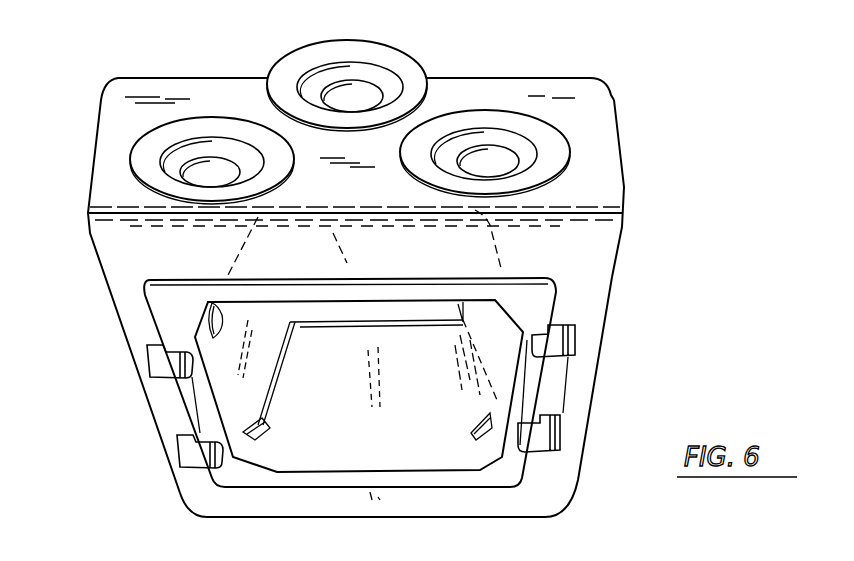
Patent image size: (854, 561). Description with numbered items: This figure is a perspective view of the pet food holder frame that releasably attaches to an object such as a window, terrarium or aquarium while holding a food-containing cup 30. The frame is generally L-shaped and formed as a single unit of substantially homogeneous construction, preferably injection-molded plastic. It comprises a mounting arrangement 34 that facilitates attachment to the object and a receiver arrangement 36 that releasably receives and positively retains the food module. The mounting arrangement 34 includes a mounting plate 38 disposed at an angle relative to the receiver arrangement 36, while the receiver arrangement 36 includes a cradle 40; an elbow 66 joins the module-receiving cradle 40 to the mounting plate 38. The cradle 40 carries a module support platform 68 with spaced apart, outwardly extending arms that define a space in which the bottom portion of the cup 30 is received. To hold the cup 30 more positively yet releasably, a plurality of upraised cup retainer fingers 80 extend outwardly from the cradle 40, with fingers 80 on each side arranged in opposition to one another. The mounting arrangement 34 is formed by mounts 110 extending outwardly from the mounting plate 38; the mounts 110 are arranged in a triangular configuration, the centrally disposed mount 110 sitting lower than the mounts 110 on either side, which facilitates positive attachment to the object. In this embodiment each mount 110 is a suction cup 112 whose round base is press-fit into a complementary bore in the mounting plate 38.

The cup 30 is at (215, 496).
The mounting arrangement 34 is at (512, 60).
The receiver arrangement 36 is at (132, 405).
The mounting plate 38 is at (640, 168).
The cradle 40 is at (636, 278).
The elbow 66 is at (95, 213).
The module support platform 68 is at (588, 498).
The cup retainer finger 80 is at (150, 369).
The mount 110 is at (133, 148).
The suction cup 112 is at (312, 44).